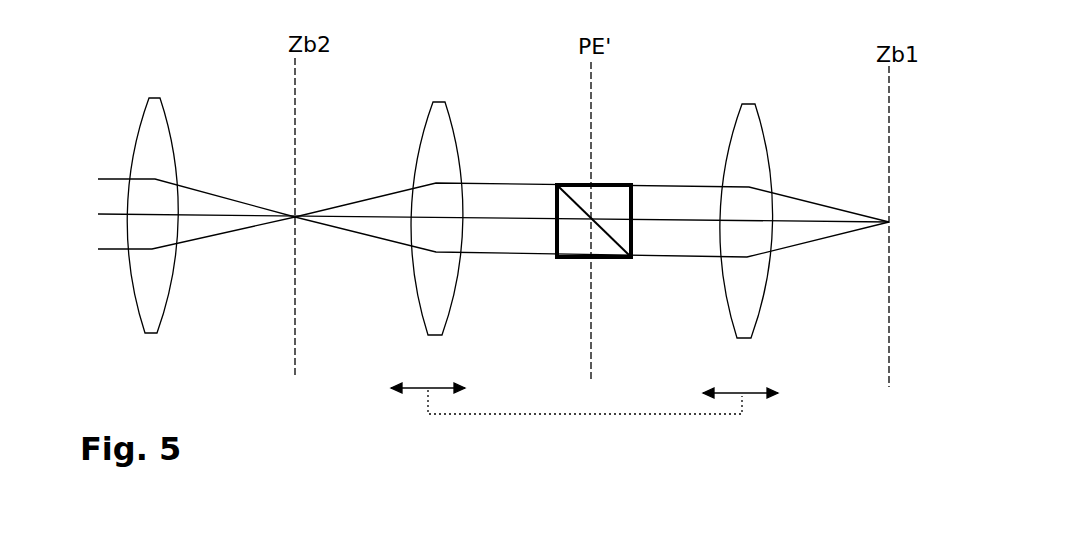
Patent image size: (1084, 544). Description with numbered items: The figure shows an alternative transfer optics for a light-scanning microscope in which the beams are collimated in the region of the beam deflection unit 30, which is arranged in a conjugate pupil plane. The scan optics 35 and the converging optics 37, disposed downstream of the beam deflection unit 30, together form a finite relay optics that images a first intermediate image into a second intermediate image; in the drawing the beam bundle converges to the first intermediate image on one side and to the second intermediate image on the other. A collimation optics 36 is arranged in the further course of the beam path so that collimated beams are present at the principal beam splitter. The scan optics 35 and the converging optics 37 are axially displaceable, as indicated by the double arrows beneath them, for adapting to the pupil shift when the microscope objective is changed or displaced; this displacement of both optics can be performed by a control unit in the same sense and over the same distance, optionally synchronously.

The beam deflection unit 30 is at (570, 183).
The scan optics 35 is at (733, 120).
The collimation optics 36 is at (140, 135).
The converging optics 37 is at (427, 130).